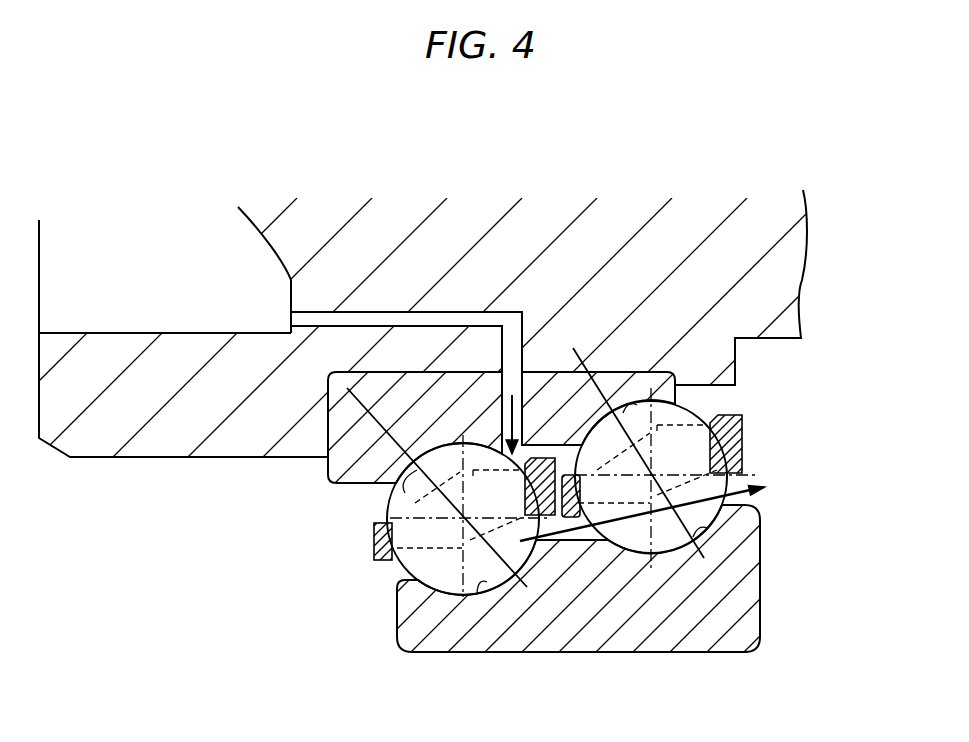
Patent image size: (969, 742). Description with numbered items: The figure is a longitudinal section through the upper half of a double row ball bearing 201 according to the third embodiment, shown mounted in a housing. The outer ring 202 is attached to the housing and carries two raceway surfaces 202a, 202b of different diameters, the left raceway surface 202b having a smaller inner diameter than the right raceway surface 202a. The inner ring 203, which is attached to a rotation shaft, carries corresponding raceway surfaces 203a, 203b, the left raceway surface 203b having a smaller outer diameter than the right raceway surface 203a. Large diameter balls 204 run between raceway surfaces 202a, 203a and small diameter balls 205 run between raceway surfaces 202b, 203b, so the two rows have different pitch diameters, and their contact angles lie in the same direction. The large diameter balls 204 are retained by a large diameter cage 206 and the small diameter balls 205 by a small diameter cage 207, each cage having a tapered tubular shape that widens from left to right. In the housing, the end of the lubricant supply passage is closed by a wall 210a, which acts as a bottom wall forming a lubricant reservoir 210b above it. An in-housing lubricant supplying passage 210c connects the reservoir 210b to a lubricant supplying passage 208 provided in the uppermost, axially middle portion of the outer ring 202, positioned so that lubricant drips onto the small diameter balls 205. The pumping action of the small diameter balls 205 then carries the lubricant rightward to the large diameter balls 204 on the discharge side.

The double row ball bearing 201 is at (603, 446).
The outer ring 202 is at (340, 470).
The raceway surface 202a is at (660, 365).
The raceway surface 202b is at (397, 487).
The inner ring 203 is at (673, 630).
The raceway surface 203a is at (715, 527).
The raceway surface 203b is at (480, 583).
The large diameter ball 204 is at (723, 482).
The small diameter ball 205 is at (417, 562).
The large diameter cage 206 is at (742, 427).
The small diameter cage 207 is at (373, 547).
The lubricant supplying passage 208 is at (524, 388).
The wall 210a is at (157, 445).
The lubricant reservoir 210b is at (183, 295).
The in-housing lubricant supplying passage 210c is at (368, 312).